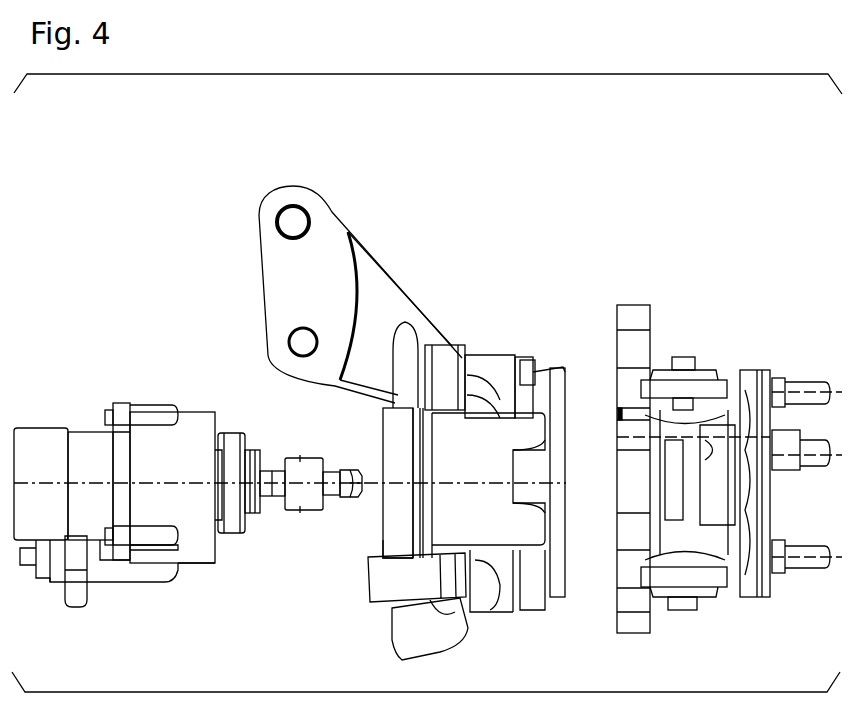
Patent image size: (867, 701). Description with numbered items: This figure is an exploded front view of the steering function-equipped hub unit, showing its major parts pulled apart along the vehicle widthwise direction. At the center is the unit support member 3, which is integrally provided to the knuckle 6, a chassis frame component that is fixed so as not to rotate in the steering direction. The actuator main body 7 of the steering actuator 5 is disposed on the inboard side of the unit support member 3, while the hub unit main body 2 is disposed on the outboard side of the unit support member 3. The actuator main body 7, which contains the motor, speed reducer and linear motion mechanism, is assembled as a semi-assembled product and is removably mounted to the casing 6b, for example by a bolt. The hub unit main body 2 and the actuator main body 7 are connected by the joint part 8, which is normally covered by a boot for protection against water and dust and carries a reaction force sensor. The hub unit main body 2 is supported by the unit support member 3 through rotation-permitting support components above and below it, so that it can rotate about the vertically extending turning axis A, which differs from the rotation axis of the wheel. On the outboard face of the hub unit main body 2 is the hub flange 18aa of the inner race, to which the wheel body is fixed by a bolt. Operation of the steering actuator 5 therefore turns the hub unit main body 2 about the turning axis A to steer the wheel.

The hub unit main body 2 is at (681, 350).
The unit support member 3 is at (385, 312).
The steering actuator 5 is at (128, 398).
The knuckle 6 is at (350, 218).
The casing 6b is at (390, 505).
The actuator main body 7 is at (47, 443).
The joint part 8 is at (335, 497).
The hub flange 18aa is at (762, 372).
The turning axis A is at (700, 605).